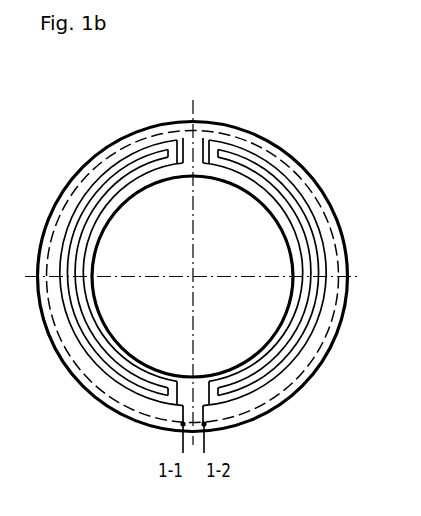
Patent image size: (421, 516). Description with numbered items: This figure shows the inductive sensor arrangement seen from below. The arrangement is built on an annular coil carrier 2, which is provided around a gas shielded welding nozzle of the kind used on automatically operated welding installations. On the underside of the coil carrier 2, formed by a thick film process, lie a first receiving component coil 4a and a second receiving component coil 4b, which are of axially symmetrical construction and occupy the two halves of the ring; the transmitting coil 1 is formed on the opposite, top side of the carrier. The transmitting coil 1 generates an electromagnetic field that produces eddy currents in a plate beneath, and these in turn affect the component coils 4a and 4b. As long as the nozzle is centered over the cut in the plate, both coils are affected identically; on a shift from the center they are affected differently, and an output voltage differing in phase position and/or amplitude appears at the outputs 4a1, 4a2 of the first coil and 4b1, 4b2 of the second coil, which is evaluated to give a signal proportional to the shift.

The transmitting coil 1 is at (263, 408).
The annular coil carrier 2 is at (300, 393).
The first receiving component coil 4a is at (119, 251).
The output of first receiving component coil 4a1 is at (165, 149).
The output of first receiving component coil 4a2 is at (183, 138).
The second receiving component coil 4b is at (275, 251).
The output of second receiving component coil 4b1 is at (221, 149).
The output of second receiving component coil 4b2 is at (203, 138).